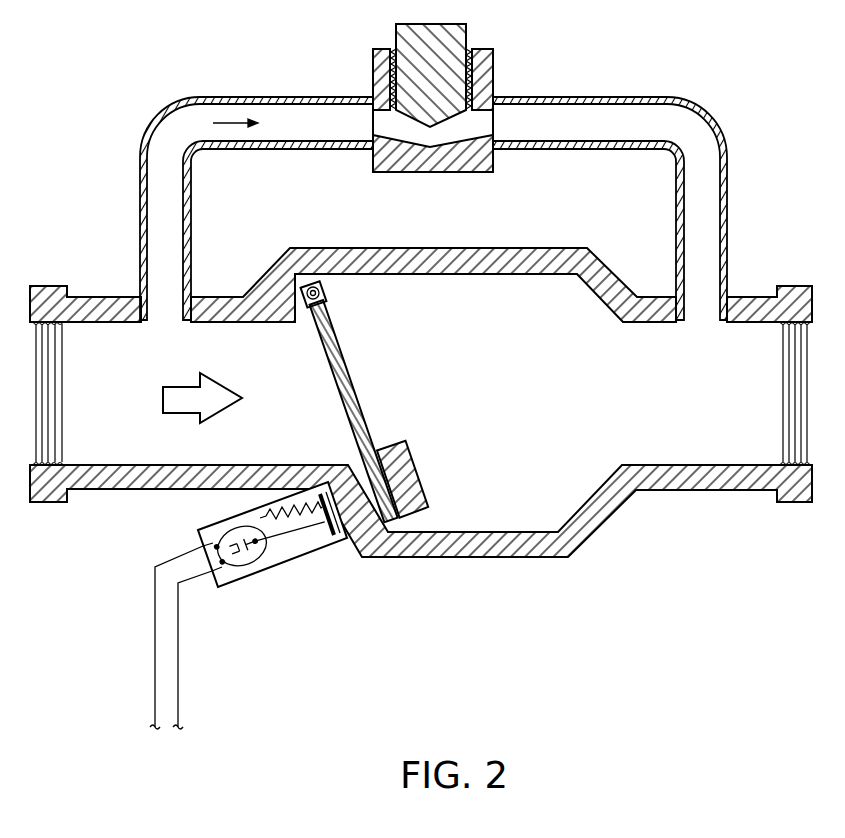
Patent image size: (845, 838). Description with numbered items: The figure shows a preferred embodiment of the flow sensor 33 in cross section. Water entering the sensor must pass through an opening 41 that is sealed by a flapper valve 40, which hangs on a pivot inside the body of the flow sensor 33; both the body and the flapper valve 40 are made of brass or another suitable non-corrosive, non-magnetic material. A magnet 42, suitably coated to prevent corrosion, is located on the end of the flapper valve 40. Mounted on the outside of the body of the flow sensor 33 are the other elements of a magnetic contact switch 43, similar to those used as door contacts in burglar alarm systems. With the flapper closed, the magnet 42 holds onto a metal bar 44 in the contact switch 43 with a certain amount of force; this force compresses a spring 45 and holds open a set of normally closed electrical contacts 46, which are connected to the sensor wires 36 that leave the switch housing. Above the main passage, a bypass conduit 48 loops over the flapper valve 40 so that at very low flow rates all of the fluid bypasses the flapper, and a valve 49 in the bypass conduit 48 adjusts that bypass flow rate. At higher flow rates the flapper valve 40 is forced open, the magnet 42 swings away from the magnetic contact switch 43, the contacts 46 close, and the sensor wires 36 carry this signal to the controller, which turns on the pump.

The flow sensor 33 is at (618, 512).
The sensor wires 36 is at (178, 675).
The flapper valve 40 is at (353, 384).
The opening 41 is at (122, 407).
The magnet 42 is at (421, 472).
The magnetic contact switch 43 is at (286, 561).
The metal bar 44 is at (332, 537).
The spring 45 is at (270, 510).
The electrical contacts 46 is at (244, 567).
The bypass conduit 48 is at (177, 257).
The valve 49 is at (382, 48).